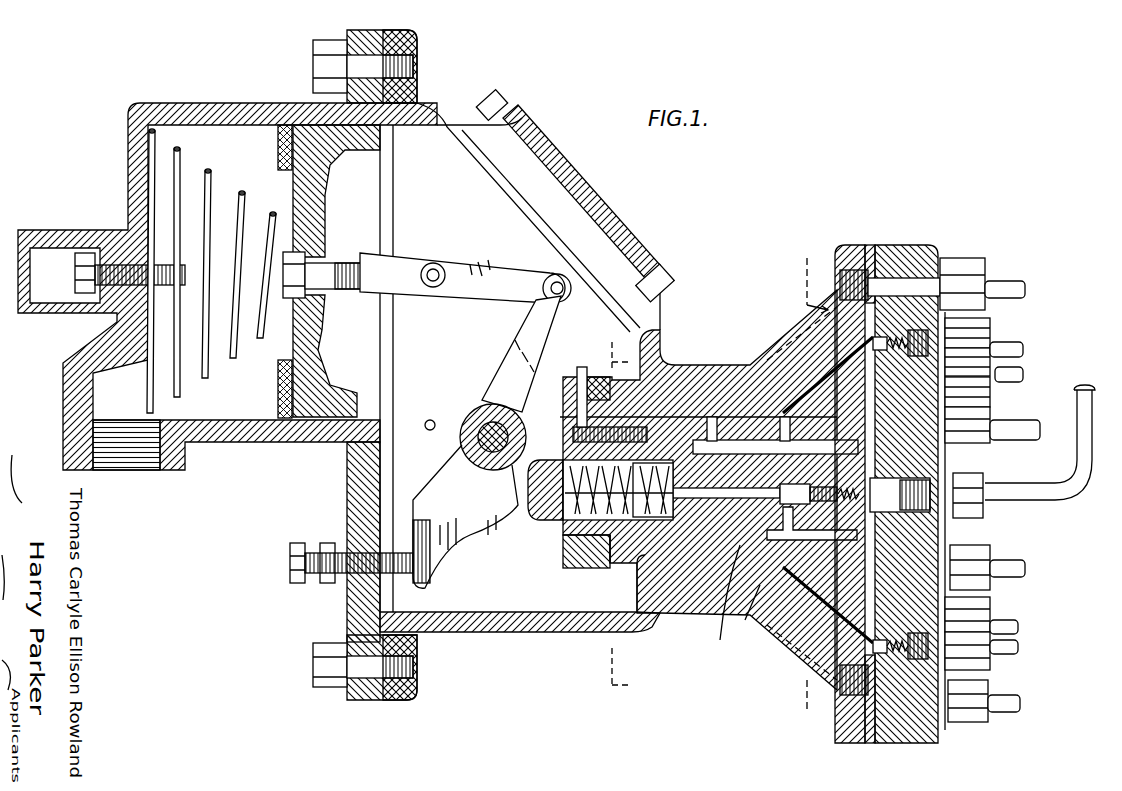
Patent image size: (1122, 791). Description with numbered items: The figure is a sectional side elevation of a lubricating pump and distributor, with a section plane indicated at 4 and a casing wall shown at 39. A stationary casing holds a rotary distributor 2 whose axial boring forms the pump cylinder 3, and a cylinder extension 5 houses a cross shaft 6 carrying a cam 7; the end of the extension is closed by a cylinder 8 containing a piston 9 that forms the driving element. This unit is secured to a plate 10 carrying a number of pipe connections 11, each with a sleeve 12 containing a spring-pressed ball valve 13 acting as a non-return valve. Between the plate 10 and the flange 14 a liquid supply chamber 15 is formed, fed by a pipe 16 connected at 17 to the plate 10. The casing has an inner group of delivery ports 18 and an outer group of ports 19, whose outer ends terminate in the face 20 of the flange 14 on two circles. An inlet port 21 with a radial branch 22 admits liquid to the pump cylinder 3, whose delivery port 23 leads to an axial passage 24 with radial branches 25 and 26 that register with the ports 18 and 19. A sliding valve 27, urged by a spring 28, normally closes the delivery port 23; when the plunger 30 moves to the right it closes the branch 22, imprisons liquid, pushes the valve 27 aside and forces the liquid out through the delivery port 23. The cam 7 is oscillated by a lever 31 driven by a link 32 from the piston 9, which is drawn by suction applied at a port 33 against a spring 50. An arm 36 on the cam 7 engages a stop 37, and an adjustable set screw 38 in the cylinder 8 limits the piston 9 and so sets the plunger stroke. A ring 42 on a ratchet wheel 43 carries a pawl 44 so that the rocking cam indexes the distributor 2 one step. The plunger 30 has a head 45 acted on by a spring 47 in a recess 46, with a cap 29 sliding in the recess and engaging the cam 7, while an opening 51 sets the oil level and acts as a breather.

The rotary distributor 2 is at (667, 382).
The pump cylinder 3 is at (701, 514).
The section line 4 is at (814, 487).
The cylinder extension 5 is at (440, 120).
The cross shaft 6 is at (487, 424).
The cam 7 is at (465, 516).
The cylinder 8 is at (257, 120).
The piston 9 is at (320, 197).
The plate 10 is at (903, 260).
The pipe connections 11 is at (1023, 350).
The sleeve 12 is at (962, 345).
The spring-pressed ball valve 13 is at (897, 340).
The flange 14 is at (850, 258).
The liquid supply chamber 15 is at (868, 442).
The pipe 16 is at (1085, 448).
The connection 17 is at (970, 495).
The inner group of delivery ports 18 is at (822, 385).
The outer group of delivery ports 19 is at (830, 317).
The face 20 is at (890, 735).
The inlet port 21 is at (812, 527).
The branch 22 is at (745, 612).
The delivery port 23 is at (900, 480).
The passage 24 is at (730, 455).
The radial branch 25 is at (712, 428).
The radial branch 26 is at (785, 430).
The sliding valve 27 is at (940, 535).
The spring 28 is at (884, 495).
The cap 29 is at (546, 468).
The plunger 30 is at (722, 603).
The lever 31 is at (532, 347).
The link 32 is at (500, 268).
The port 33 is at (122, 470).
The arm 36 is at (437, 502).
The stop 37 is at (403, 574).
The adjustable set screw 38 is at (76, 272).
The wall 39 is at (360, 472).
The ring 42 is at (578, 372).
The ratchet wheel 43 is at (595, 578).
The pawl 44 is at (605, 372).
The head 45 is at (545, 515).
The recess 46 is at (690, 578).
The spring 47 is at (665, 612).
The spring 50 is at (212, 365).
The opening 51 is at (429, 412).